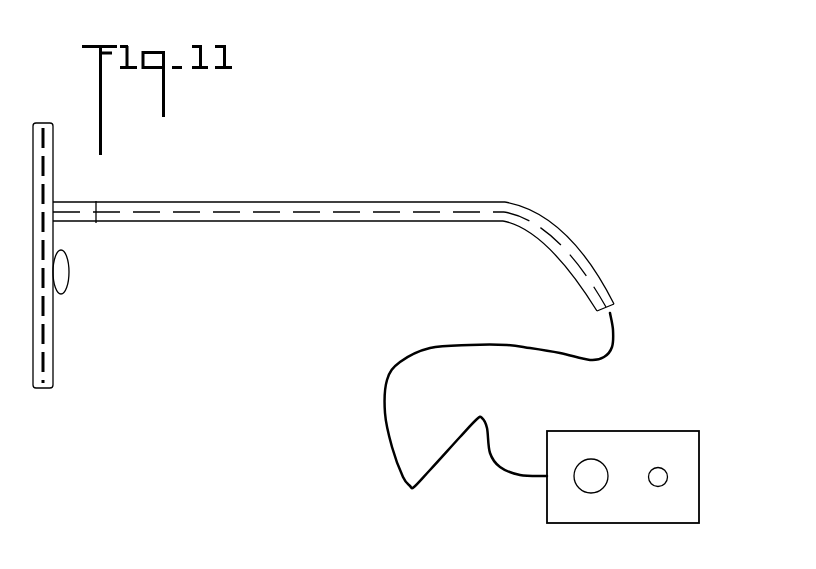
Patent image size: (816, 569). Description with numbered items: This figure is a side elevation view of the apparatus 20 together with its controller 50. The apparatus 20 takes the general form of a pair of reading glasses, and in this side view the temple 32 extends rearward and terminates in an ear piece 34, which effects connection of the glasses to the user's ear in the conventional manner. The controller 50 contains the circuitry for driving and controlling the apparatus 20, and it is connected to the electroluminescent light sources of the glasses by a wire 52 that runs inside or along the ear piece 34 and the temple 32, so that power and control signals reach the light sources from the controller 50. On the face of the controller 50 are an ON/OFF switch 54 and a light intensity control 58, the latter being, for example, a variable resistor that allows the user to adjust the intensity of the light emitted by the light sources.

The apparatus 20 is at (470, 165).
The temple 32 is at (293, 202).
The ear piece 34 is at (593, 263).
The wire 52 is at (358, 212).
The controller 50 is at (628, 473).
The light intensity control 58 is at (590, 470).
The ON/OFF switch 54 is at (660, 470).